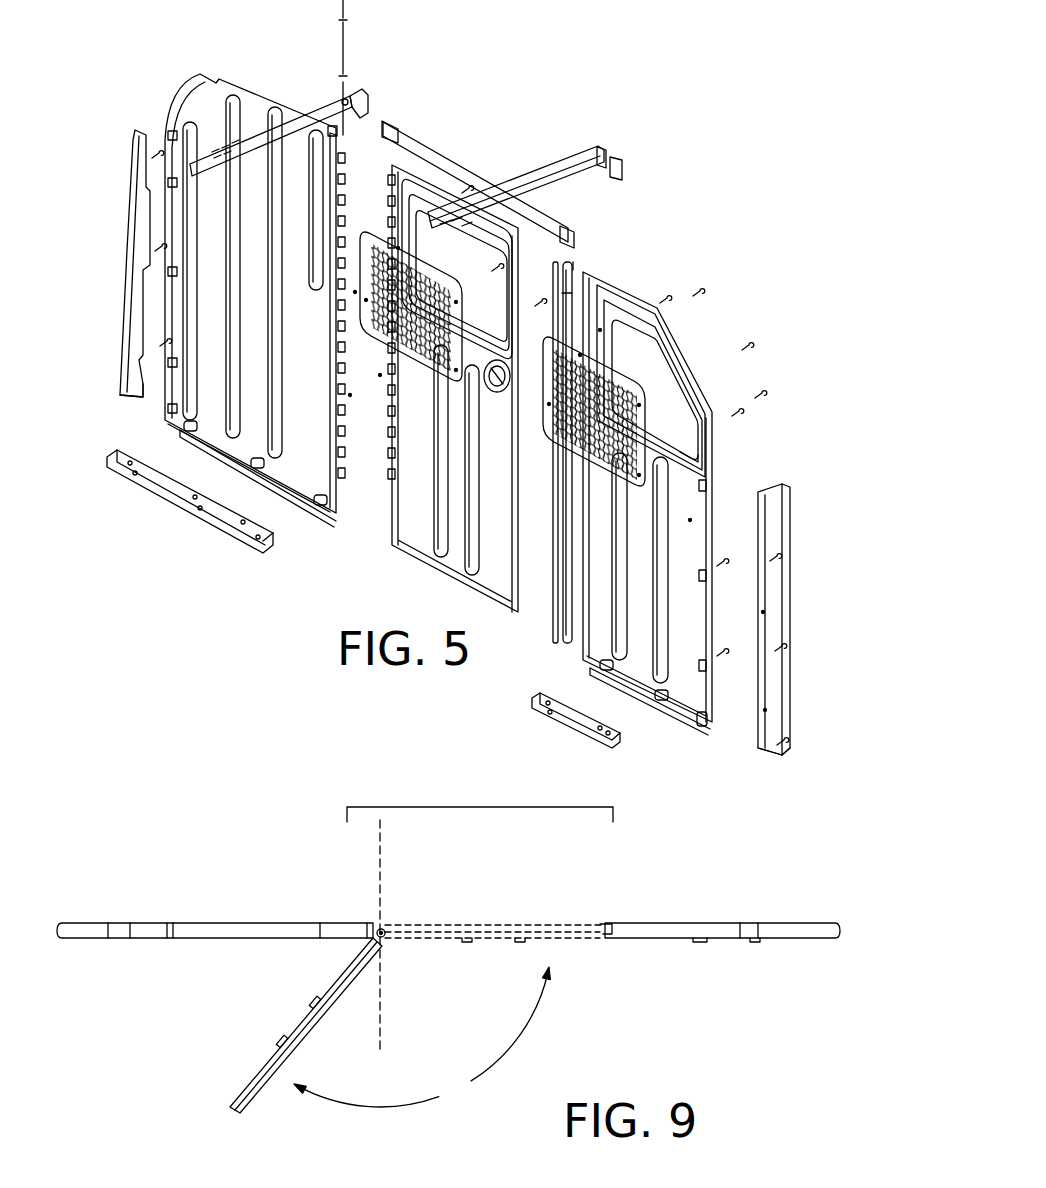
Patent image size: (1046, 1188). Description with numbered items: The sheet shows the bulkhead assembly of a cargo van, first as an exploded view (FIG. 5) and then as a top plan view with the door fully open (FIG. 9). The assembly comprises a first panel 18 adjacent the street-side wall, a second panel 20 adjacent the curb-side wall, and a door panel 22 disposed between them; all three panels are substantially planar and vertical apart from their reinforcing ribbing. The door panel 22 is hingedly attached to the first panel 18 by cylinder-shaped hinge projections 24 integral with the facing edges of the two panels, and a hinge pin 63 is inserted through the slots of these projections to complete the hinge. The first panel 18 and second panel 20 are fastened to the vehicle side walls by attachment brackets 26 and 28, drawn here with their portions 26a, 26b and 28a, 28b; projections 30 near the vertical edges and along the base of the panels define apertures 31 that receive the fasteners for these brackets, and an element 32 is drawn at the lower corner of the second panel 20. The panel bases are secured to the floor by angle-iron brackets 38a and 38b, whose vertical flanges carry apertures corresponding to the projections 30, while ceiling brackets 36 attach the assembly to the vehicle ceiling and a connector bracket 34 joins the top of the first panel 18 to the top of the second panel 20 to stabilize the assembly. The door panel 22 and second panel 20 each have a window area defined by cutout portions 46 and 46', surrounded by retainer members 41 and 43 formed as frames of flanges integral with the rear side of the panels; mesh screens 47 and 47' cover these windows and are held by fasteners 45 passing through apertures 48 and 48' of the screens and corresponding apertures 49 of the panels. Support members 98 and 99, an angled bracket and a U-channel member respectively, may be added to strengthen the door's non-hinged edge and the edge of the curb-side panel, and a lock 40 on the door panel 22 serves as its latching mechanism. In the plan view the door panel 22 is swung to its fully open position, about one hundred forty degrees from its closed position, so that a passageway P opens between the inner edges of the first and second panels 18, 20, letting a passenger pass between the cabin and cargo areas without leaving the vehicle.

In FIG. 5, the first panel 18 is at (205, 110).
In FIG. 9, the first panel 18 is at (75, 926).
In FIG. 5, the second panel 20 is at (688, 495).
In FIG. 9, the second panel 20 is at (822, 923).
In FIG. 5, the door panel 22 is at (423, 560).
In FIG. 9, the door panel 22 is at (257, 1100).
In FIG. 5, the hinge projections 24 is at (348, 404).
In FIG. 5, the attachment bracket 26 is at (122, 198).
In FIG. 5, the side rail flange 26a is at (130, 302).
In FIG. 5, the side rail bottom flange 26b is at (128, 392).
In FIG. 5, the attachment bracket 28 is at (808, 585).
In FIG. 5, the side rail flange 28a is at (782, 683).
In FIG. 5, the side rail bottom flange 28b is at (758, 747).
In FIG. 5, the projections 30 is at (193, 438).
In FIG. 5, the apertures 31 is at (188, 428).
In FIG. 5, the hinge 32 is at (696, 727).
In FIG. 5, the connector bracket 34 is at (414, 139).
In FIG. 5, the ceiling brackets 36 is at (566, 160).
In FIG. 5, the floor bracket 38a is at (152, 490).
In FIG. 5, the floor bracket 38b is at (565, 720).
In FIG. 5, the lock 40 is at (497, 394).
In FIG. 5, the retainer member 41 is at (413, 167).
In FIG. 5, the retainer member 43 is at (628, 298).
In FIG. 5, the fasteners 45 is at (464, 186).
In FIG. 5, the cutout portion 46 is at (461, 276).
In FIG. 5, the cutout portion 46' is at (653, 389).
In FIG. 5, the mesh screen 47 is at (372, 307).
In FIG. 5, the mesh screen 47' is at (580, 414).
In FIG. 5, the apertures 48 is at (405, 286).
In FIG. 5, the apertures 48' is at (602, 411).
In FIG. 5, the apertures 49 is at (552, 268).
In FIG. 5, the hinge pin 63 is at (346, 56).
In FIG. 5, the support member 98 is at (575, 263).
In FIG. 5, the support member 99 is at (590, 262).
In FIG. 9, the passageway P is at (473, 805).